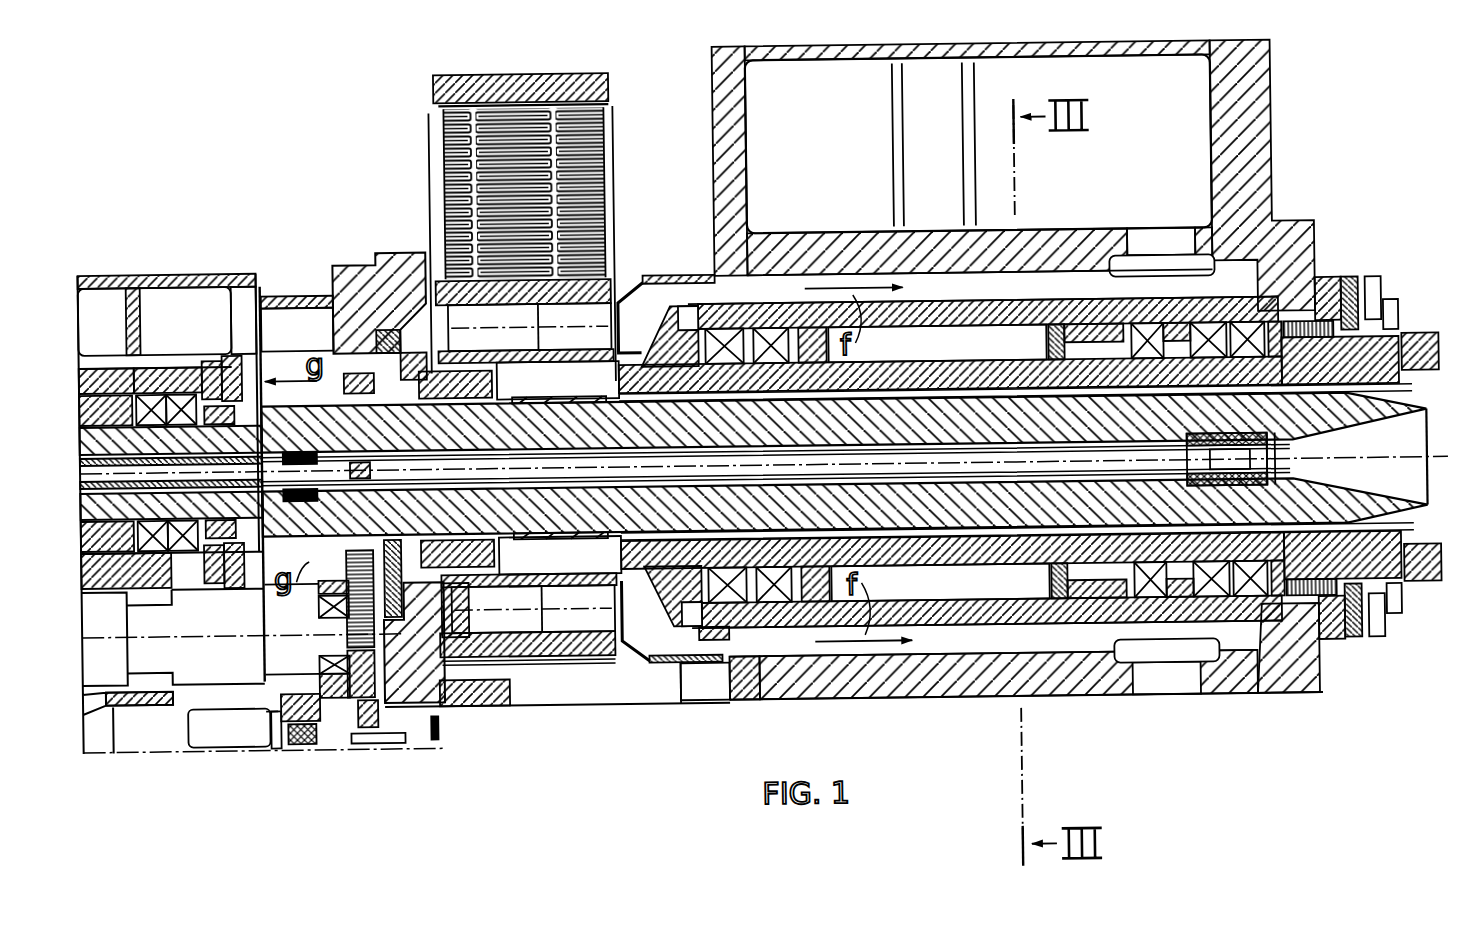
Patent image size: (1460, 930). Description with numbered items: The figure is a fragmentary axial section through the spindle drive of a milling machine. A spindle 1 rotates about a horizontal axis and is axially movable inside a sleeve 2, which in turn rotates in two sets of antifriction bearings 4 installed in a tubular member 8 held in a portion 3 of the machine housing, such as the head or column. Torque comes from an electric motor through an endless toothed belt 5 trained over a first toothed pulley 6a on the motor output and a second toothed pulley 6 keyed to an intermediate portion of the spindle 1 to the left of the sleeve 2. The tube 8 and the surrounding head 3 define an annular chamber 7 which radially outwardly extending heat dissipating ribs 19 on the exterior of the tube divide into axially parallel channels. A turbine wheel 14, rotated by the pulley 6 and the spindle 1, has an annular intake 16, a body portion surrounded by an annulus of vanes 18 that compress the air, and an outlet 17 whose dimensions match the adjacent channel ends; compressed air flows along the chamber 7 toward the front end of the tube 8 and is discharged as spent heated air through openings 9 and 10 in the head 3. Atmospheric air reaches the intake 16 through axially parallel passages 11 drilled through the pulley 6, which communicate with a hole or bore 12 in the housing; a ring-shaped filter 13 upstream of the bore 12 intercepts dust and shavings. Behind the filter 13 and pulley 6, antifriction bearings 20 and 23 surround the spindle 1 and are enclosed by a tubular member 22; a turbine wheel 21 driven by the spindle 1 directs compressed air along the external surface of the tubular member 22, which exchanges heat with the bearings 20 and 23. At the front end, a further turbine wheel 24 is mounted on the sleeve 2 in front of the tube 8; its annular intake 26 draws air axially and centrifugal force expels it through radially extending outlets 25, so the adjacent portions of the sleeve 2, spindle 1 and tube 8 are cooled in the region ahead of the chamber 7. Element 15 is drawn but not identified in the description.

The spindle 1 is at (1373, 365).
The sleeve 2 is at (940, 560).
The portion of the housing 3 is at (733, 93).
The antifriction bearings 4 is at (767, 332).
The endless toothed belt 5 is at (582, 158).
The second toothed pulley 6 is at (543, 662).
The first toothed pulley 6a is at (445, 78).
The annular chamber 7 is at (1030, 290).
The tubular member 8 is at (948, 325).
The opening 9 is at (1177, 688).
The opening 10 is at (1155, 240).
The axially parallel passages 11 is at (582, 320).
The hole or bore 12 is at (420, 600).
The ring-shaped filter 13 is at (380, 330).
The turbine wheel 14 is at (680, 665).
The cover plate 15 is at (690, 278).
The annular intake 16 is at (645, 620).
The outlet 17 is at (730, 650).
The vanes 18 is at (640, 303).
The heat dissipating ribs 19 is at (1077, 295).
The antifriction bearing 20 is at (112, 363).
The turbine wheel 21 is at (233, 352).
The tubular member 22 is at (170, 363).
The antifriction bearing 23 is at (185, 575).
The turbine wheel 24 is at (1375, 308).
The radially extending outlets 25 is at (1363, 287).
The annular intake 26 is at (1383, 312).